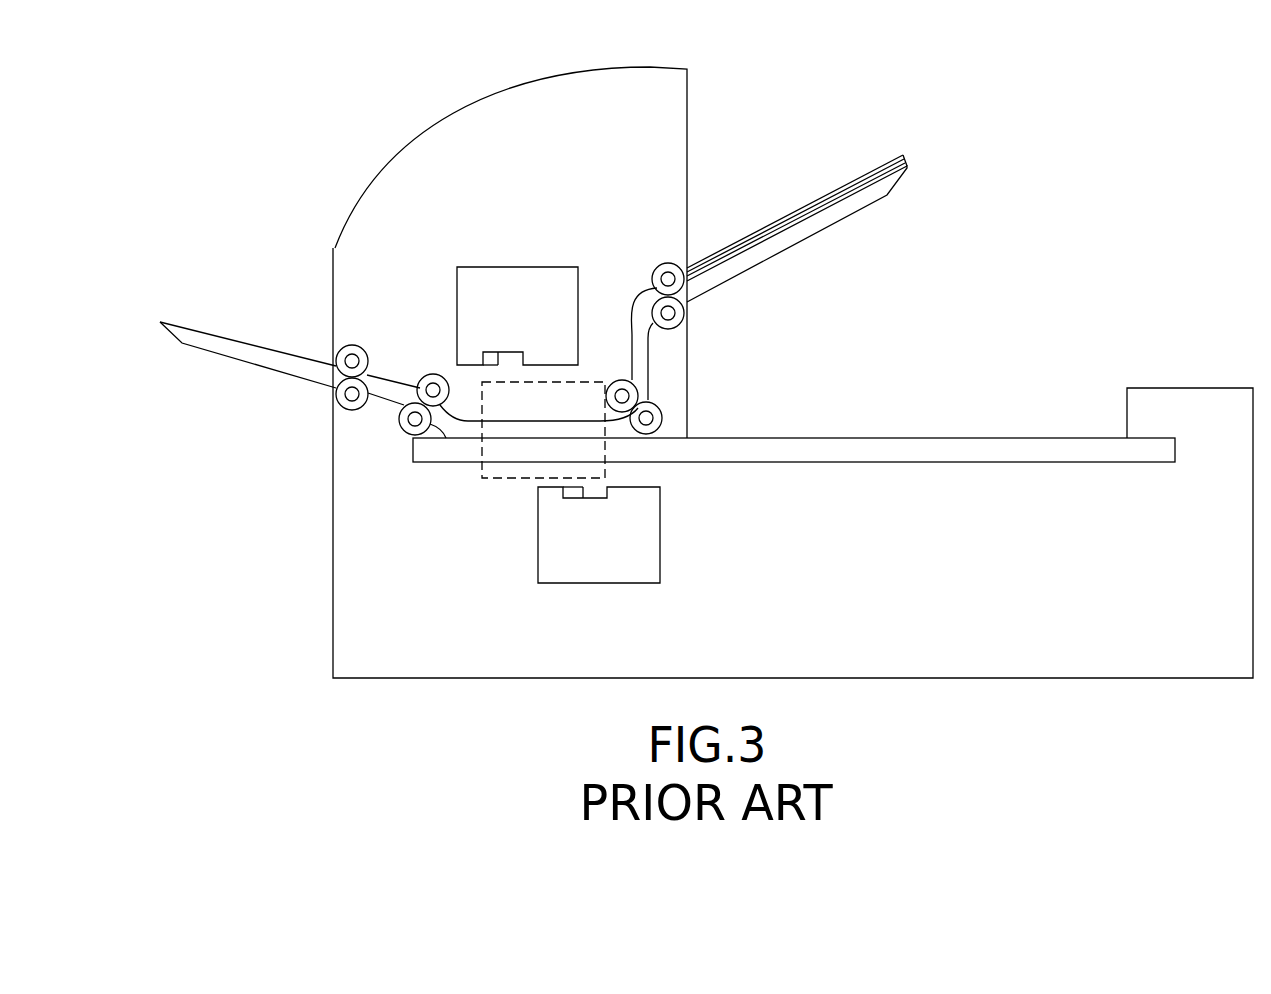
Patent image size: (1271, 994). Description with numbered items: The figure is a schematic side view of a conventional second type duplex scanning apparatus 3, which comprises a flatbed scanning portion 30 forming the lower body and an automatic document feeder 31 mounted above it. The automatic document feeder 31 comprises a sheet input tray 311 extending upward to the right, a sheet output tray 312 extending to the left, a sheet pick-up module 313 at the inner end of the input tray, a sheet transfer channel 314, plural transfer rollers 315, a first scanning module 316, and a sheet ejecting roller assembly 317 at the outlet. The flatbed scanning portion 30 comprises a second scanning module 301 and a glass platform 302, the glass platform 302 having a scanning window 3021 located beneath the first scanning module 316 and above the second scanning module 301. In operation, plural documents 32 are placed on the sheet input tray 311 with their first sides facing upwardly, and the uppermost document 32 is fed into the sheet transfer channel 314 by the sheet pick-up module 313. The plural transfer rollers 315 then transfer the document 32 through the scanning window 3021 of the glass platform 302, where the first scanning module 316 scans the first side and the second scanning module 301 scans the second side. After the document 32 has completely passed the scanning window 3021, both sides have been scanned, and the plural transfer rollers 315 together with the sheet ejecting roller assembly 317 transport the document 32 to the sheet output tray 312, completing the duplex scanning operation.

The duplex scanning apparatus 3 is at (1079, 112).
The flatbed scanning portion 30 is at (320, 547).
The automatic document feeder 31 is at (607, 54).
The documents 32 is at (808, 205).
The second scanning module 301 is at (662, 542).
The glass platform 302 is at (875, 455).
The scanning window 3021 is at (507, 480).
The sheet input tray 311 is at (807, 227).
The sheet output tray 312 is at (223, 337).
The sheet pick-up module 313 is at (668, 262).
The sheet transfer channel 314 is at (649, 382).
The transfer rollers 315 is at (403, 430).
The first scanning module 316 is at (518, 266).
The sheet ejecting roller assembly 317 is at (342, 405).